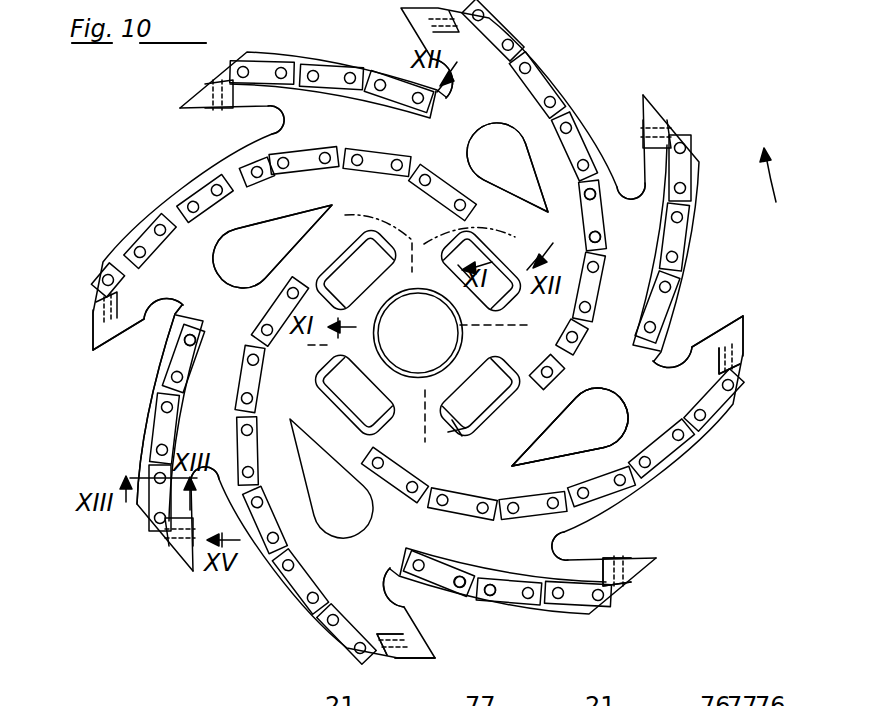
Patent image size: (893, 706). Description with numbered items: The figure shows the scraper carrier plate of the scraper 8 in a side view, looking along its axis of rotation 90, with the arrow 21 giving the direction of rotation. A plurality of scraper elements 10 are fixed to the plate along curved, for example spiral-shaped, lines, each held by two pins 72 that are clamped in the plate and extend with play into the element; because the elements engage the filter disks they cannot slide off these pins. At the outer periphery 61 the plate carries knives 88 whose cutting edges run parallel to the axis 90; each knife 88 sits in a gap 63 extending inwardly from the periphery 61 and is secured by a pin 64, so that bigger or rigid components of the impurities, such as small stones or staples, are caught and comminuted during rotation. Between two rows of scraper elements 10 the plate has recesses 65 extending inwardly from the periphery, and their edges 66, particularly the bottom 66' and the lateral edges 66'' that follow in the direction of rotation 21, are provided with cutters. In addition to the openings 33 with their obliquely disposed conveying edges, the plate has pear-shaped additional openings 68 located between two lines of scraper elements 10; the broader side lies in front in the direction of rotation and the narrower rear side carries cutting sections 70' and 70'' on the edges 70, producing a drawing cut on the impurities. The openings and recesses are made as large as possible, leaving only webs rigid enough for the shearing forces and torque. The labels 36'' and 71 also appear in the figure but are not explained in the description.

The scraper 8 is at (160, 198).
The scraper element 10 is at (168, 440).
The arrow 21 is at (780, 162).
The openings 33 is at (458, 432).
The blade edge 36'' is at (707, 339).
The periphery 61 is at (655, 562).
The gap 63 is at (405, 652).
The pin 64 is at (400, 648).
The recesses 65 is at (236, 129).
The edges 66 is at (132, 404).
The bottom 66' is at (418, 333).
The lateral edges 66'' is at (131, 331).
The additional openings 68 is at (510, 163).
The edges 70 is at (420, 335).
The cutting sections 70' is at (420, 350).
The edge sections 70'' is at (547, 294).
The wear plate strip 71 is at (143, 230).
The pins 72 is at (178, 378).
The knives 88 is at (96, 330).
The axis of rotation 90 is at (418, 333).